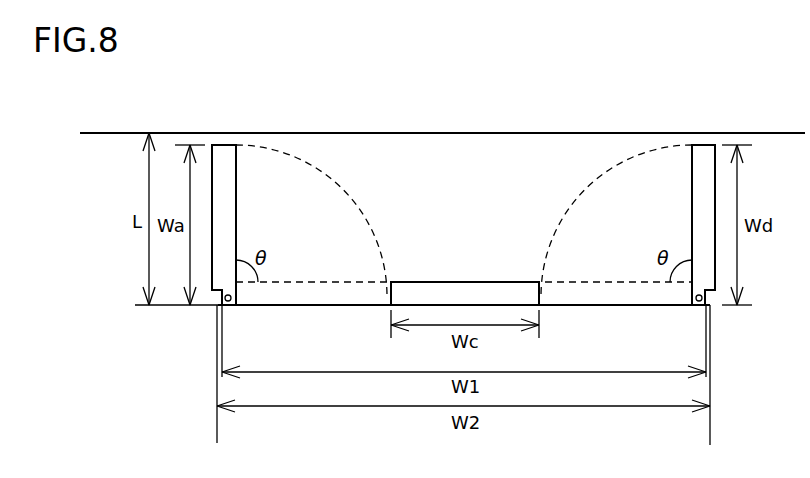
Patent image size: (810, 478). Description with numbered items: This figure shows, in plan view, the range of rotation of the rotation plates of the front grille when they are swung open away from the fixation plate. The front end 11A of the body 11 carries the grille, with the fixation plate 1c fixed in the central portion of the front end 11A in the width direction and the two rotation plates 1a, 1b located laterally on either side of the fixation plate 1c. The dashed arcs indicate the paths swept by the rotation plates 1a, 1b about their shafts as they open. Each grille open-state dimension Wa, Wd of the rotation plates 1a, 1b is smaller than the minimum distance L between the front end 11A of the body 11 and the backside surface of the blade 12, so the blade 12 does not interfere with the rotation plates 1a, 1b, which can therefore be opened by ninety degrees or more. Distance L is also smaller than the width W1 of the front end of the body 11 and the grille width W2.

The rotation plate 1a is at (224, 158).
The rotation plate 1b is at (703, 158).
The fixation plate 1c is at (494, 295).
The blade 12 is at (449, 133).
The body 11 is at (697, 427).
The front end 11A is at (293, 306).